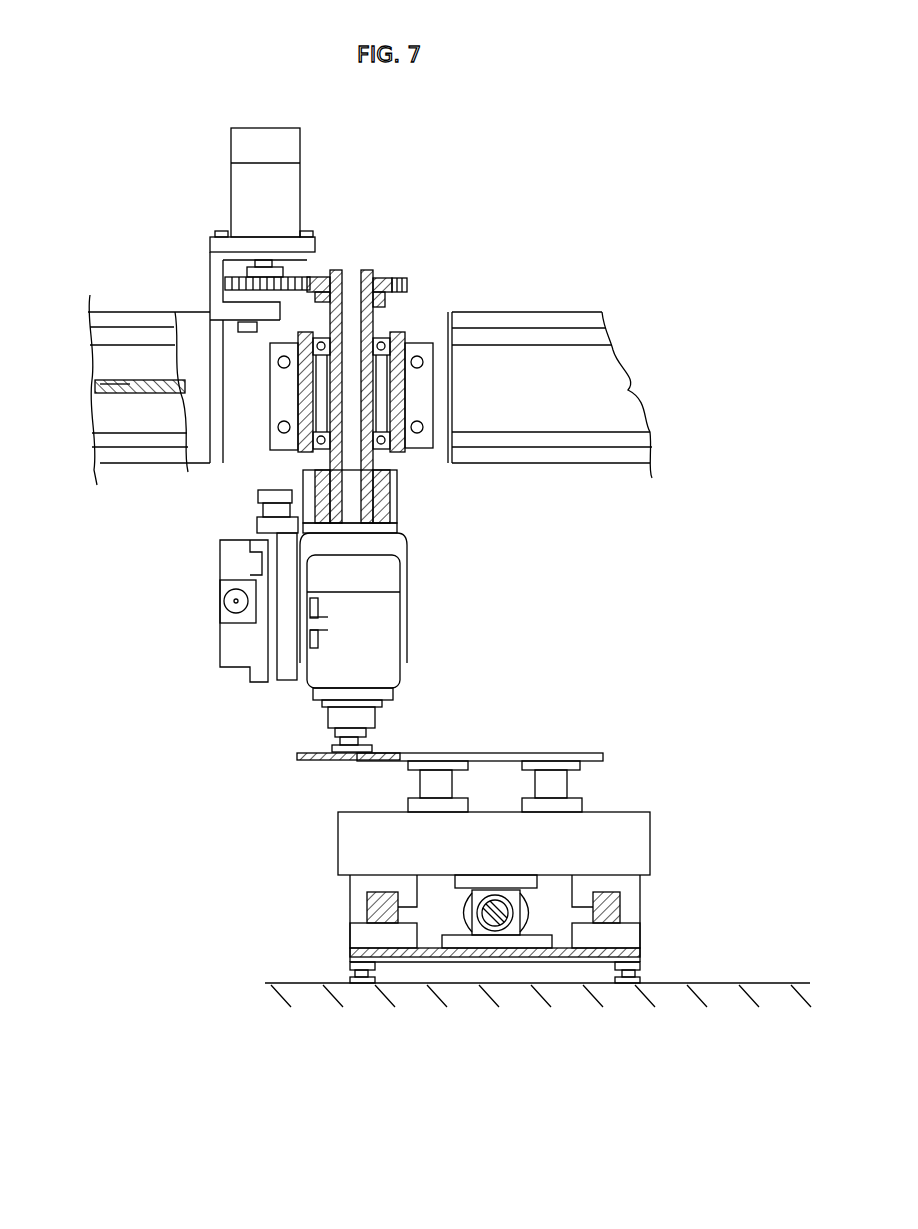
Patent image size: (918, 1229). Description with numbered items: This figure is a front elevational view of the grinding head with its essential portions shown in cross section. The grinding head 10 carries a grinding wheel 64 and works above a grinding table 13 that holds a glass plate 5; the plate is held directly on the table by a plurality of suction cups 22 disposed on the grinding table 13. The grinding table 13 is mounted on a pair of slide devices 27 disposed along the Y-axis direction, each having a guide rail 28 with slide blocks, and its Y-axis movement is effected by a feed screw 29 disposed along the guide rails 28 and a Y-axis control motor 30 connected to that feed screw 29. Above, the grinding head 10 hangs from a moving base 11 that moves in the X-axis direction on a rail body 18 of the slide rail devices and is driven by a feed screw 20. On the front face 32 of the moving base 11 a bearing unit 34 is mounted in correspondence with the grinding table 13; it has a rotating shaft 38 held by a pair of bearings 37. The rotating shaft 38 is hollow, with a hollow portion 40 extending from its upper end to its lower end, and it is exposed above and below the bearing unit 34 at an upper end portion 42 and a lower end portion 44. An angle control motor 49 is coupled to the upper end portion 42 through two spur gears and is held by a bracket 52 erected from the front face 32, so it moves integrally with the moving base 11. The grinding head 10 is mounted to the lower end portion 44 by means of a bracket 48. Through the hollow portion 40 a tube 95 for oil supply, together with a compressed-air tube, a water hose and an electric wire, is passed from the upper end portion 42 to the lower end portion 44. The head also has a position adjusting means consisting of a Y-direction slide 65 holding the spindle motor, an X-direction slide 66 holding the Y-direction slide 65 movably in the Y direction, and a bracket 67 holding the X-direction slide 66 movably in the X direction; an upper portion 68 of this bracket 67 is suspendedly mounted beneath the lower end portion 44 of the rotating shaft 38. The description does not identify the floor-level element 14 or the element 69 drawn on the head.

The glass plate 5 is at (491, 746).
The grinding head 10 is at (407, 600).
The moving base 11 is at (530, 337).
The grinding table 13 is at (603, 820).
The floor 14 is at (758, 982).
The rail body 18 is at (125, 440).
The feed screw 20 is at (104, 389).
The suction cups 22 is at (553, 782).
The slide devices 27 is at (372, 905).
The guide rail 28 is at (380, 912).
The feed screw 29 is at (493, 915).
The Y-axis control motor 30 is at (460, 912).
The front face 32 is at (520, 337).
The bearing unit 34 is at (307, 410).
The bearings 37 is at (397, 335).
The rotating shaft 38 is at (410, 345).
The hollow portion 40 is at (357, 387).
The upper end portion 42 is at (369, 274).
The lower end portion 44 is at (380, 500).
The bracket 48 is at (372, 490).
The angle control motor 49 is at (250, 187).
The bracket 52 is at (210, 302).
The grinding wheel 64 is at (360, 655).
The Y-direction slide 65 is at (262, 602).
The X-direction slide 66 is at (350, 741).
The bracket 67 is at (310, 758).
The upper portion 68 is at (270, 622).
The clamp 69 is at (400, 627).
The tube 95 is at (352, 412).